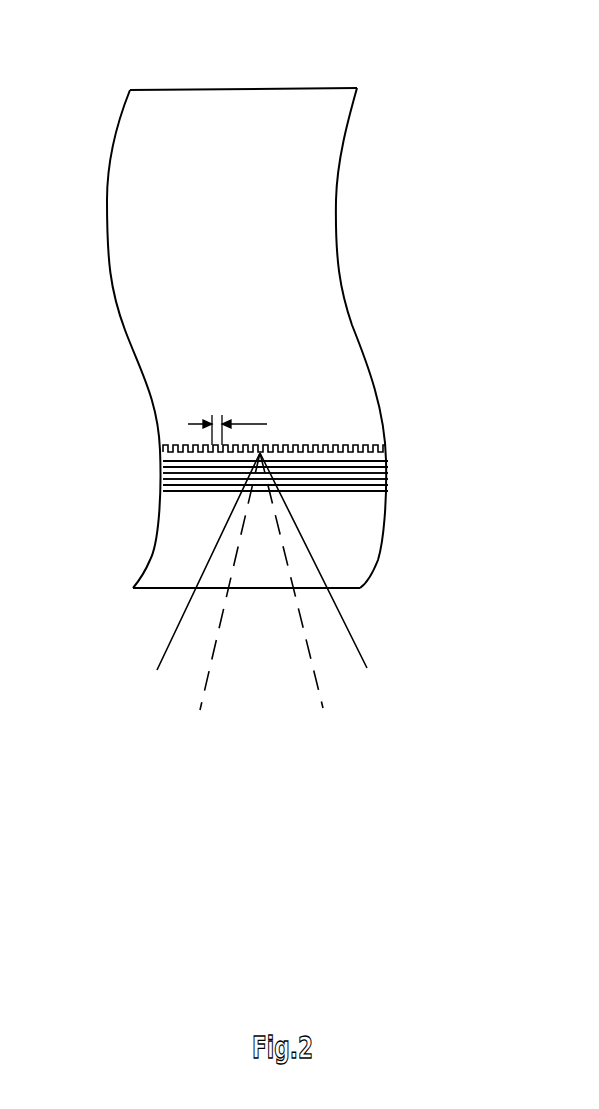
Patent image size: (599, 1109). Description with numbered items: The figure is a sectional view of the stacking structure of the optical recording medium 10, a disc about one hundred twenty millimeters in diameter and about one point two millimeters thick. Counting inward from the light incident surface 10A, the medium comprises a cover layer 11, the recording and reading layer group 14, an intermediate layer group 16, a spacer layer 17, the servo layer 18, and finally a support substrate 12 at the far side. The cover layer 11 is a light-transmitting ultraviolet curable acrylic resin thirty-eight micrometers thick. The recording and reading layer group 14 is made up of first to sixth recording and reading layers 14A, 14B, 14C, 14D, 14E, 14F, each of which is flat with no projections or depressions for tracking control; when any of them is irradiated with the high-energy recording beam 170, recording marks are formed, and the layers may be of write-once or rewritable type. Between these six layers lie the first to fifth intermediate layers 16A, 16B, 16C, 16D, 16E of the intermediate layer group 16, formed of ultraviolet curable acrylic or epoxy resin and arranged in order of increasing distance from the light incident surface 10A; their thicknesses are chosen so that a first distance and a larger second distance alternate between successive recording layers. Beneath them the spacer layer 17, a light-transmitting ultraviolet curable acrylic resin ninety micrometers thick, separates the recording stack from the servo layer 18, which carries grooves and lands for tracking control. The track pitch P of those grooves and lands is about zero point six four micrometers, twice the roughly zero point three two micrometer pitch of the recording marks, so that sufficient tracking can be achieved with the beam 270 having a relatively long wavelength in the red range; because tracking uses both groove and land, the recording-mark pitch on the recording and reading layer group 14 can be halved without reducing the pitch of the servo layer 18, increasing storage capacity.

The optical recording medium 10 is at (232, 83).
The light incident surface 10A is at (323, 590).
The cover layer 11 is at (340, 563).
The support substrate 12 is at (295, 213).
The recording and reading layer group 14 is at (477, 403).
The first recording and reading layer 14A is at (388, 492).
The second recording and reading layer 14B is at (388, 487).
The third recording and reading layer 14C is at (388, 481).
The fourth recording and reading layer 14D is at (388, 466).
The fifth recording and reading layer 14E is at (388, 460).
The sixth recording and reading layer 14F is at (388, 446).
The intermediate layer group 16 is at (72, 425).
The first intermediate layer 16A is at (165, 492).
The second intermediate layer 16B is at (165, 486).
The third intermediate layer 16C is at (164, 476).
The fourth intermediate layer 16D is at (165, 467).
The fifth intermediate layer 16E is at (164, 462).
The spacer layer 17 is at (163, 447).
The servo layer 18 is at (330, 445).
The track pitch P is at (227, 423).
The recording beam 170 is at (358, 646).
The beam 270 is at (299, 616).